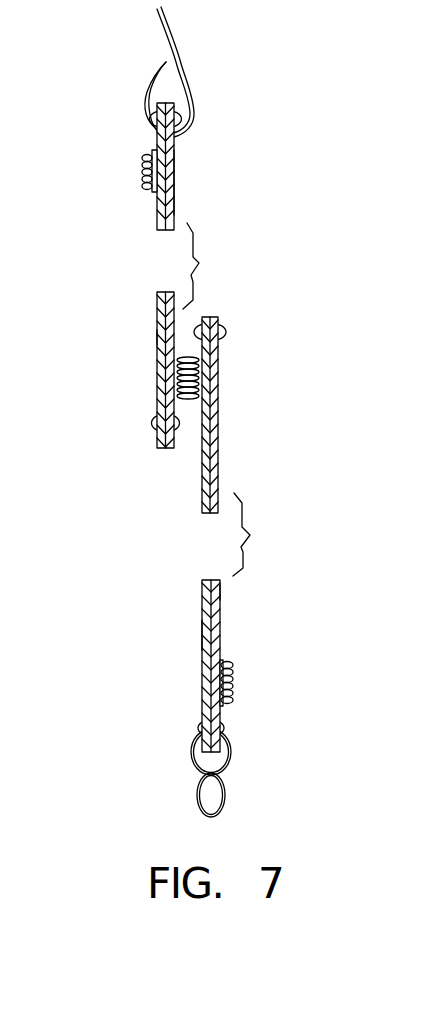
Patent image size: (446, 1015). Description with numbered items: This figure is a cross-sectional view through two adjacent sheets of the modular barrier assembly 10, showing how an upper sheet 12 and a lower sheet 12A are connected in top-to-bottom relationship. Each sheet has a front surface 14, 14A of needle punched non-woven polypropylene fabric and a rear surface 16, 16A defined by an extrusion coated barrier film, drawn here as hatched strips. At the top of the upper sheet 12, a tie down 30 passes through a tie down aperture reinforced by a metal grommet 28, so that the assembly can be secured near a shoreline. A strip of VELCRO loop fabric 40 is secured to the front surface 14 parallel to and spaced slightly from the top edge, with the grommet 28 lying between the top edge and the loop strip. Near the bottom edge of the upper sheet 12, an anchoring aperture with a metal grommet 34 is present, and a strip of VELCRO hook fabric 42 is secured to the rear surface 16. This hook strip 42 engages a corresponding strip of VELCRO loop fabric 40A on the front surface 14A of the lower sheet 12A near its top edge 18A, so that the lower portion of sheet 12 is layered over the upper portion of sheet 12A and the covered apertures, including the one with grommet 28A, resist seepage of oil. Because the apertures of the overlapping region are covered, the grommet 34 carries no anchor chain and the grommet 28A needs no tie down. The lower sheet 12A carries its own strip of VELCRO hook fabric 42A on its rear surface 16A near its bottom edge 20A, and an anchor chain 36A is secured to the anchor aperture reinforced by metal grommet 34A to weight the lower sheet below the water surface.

The modular barrier assembly 10 is at (76, 108).
The flexible sheet 12 is at (155, 318).
The flexible sheet 12A is at (202, 617).
The front surface 14 is at (156, 223).
The front surface 14A is at (208, 633).
The rear surface 16 is at (172, 219).
The rear surface 16A is at (217, 593).
The top edge 18A is at (206, 317).
The bottom edge 20A is at (208, 753).
The metal grommet 28 is at (180, 121).
The metal grommet 28A is at (225, 334).
The tie down 30 is at (168, 25).
The metal grommet 34 is at (152, 425).
The metal grommet 34A is at (224, 723).
The anchor chain 36A is at (223, 809).
The strip of VELCRO loop fabric 40 is at (152, 151).
The strip of VELCRO loop fabric 40A is at (198, 387).
The strip of VELCRO hook fabric 42 is at (160, 336).
The strip of VELCRO hook fabric 42A is at (228, 659).